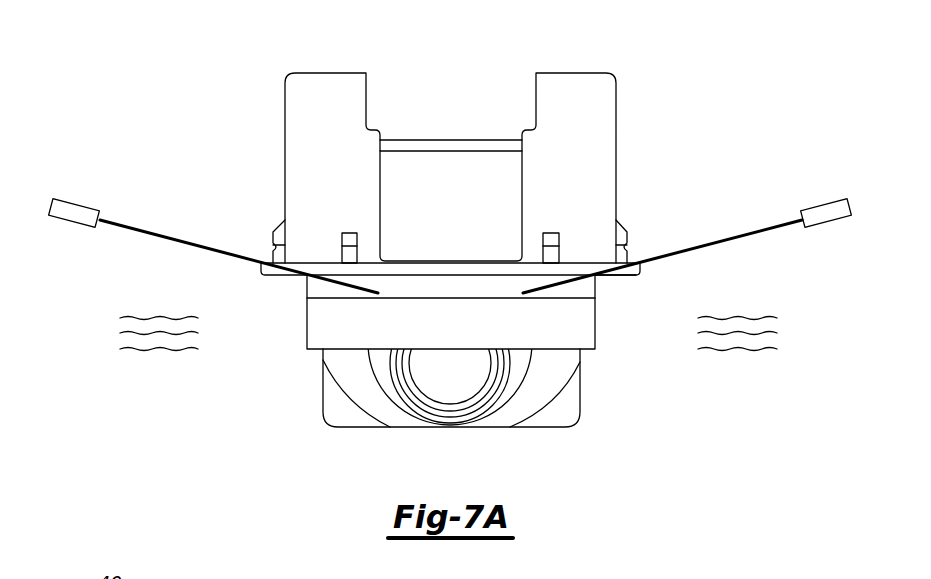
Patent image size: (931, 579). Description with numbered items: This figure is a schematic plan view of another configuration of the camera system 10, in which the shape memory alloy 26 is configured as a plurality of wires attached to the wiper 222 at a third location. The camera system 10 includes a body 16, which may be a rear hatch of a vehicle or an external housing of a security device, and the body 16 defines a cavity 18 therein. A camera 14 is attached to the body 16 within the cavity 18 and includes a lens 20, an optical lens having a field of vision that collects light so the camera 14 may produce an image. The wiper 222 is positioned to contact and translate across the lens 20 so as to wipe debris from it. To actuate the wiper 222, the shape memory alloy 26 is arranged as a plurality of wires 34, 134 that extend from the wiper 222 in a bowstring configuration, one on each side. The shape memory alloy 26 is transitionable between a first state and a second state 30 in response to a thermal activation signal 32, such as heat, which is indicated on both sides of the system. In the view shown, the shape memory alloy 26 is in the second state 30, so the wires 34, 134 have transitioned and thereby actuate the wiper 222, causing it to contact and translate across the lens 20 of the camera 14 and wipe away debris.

The camera system 10 is at (200, 53).
The camera 14 is at (578, 420).
The body 16 is at (616, 160).
The cavity 18 is at (602, 278).
The lens 20 is at (460, 383).
The shape memory alloy 26 is at (450, 234).
The wire 34 is at (160, 234).
The wire 134 is at (742, 236).
The second state 30 is at (775, 118).
The thermal activation signal 32 is at (160, 351).
The wiper 222 is at (307, 328).